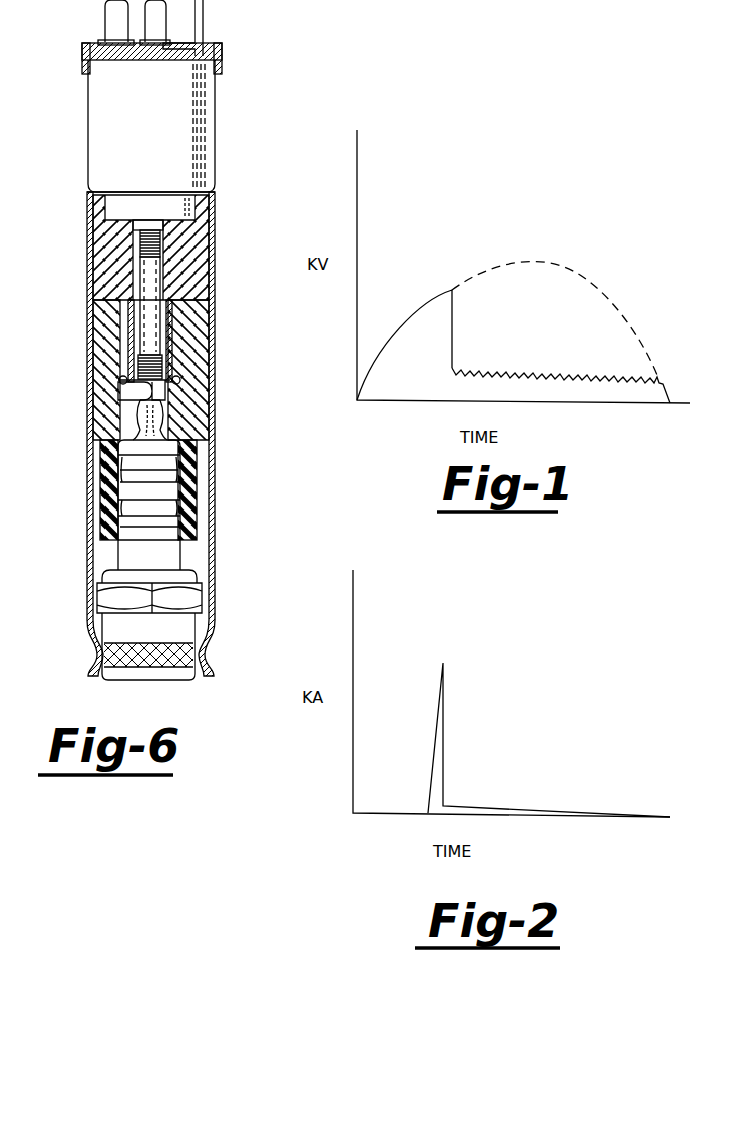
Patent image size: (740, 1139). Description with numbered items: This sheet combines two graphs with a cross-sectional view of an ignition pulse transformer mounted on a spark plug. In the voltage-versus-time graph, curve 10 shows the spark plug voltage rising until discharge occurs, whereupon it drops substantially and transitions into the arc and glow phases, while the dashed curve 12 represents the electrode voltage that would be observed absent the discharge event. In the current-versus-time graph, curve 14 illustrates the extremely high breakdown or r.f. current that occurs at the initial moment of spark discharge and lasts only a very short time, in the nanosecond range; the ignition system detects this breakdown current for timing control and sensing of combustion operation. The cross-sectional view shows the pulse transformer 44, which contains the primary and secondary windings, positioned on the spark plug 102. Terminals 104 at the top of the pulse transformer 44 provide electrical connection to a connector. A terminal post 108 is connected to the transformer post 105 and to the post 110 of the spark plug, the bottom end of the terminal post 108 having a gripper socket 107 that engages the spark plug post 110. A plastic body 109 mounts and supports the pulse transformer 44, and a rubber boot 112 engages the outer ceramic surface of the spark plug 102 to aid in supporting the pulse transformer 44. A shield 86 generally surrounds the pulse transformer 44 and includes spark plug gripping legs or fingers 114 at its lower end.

In FIG. 1, the curve 10 is at (430, 300).
In FIG. 1, the curve 12 is at (557, 267).
In FIG. 2, the curve 14 is at (445, 735).
In FIG. 6, the ignition pulse transformer 44 is at (203, 157).
In FIG. 6, the shield 86 is at (213, 520).
In FIG. 6, the spark plug 102 is at (182, 557).
In FIG. 6, the terminals 104 is at (204, 25).
In FIG. 6, the transformer post 105 is at (142, 288).
In FIG. 6, the gripper socket 107 is at (112, 472).
In FIG. 6, the terminal post 108 is at (170, 428).
In FIG. 6, the plastic body 109 is at (200, 247).
In FIG. 6, the spark plug post 110 is at (133, 405).
In FIG. 6, the rubber boot 112 is at (197, 473).
In FIG. 6, the gripping legs or fingers 114 is at (93, 662).